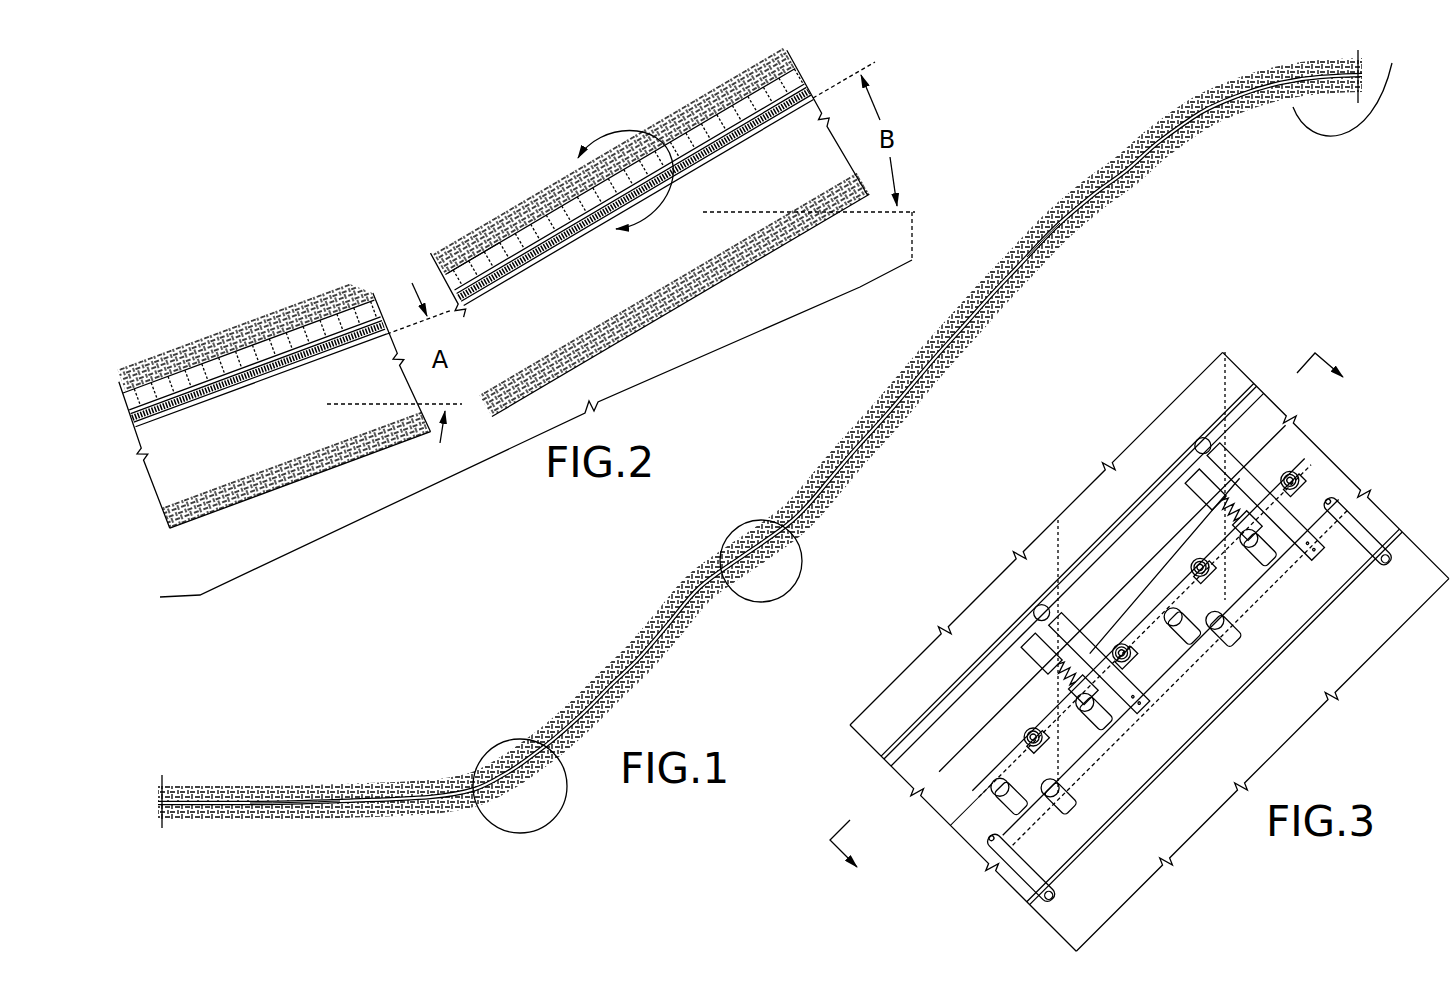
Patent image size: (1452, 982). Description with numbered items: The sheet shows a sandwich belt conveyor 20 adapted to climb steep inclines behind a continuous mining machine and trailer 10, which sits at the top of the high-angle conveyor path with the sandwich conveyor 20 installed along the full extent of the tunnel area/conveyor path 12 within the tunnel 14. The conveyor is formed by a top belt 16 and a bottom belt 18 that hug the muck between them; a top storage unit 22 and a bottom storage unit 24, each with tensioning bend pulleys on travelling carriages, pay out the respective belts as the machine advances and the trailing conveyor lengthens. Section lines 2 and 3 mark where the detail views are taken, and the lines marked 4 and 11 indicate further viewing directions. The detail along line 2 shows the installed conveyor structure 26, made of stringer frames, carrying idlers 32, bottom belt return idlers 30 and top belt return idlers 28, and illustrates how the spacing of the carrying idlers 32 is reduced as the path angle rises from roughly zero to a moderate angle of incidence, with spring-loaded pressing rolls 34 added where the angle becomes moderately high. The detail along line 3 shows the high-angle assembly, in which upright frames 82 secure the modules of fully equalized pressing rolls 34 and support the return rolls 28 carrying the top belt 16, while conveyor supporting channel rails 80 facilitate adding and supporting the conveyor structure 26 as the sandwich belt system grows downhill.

In FIG. 1, the line 2- 2 is at (465, 788).
In FIG. 1, the line 3- 3 is at (710, 578).
In FIG. 2, the section line 4- 4 is at (612, 202).
In FIG. 3, the section line 4- 4 is at (1095, 622).
In FIG. 1, the continuous mining machine and trailer 10 is at (1345, 105).
In FIG. 1, the section line 11- 11 is at (1293, 100).
In FIG. 1, the tunnel area/conveyor path 12 is at (1123, 165).
In FIG. 2, the tunnel area/conveyor path 12 is at (178, 360).
In FIG. 1, the tunnel 14 is at (1100, 232).
In FIG. 2, the tunnel 14 is at (330, 312).
In FIG. 2, the top belt 16 is at (540, 222).
In FIG. 3, the top belt 16 is at (913, 720).
In FIG. 2, the bottom belt 18 is at (538, 262).
In FIG. 3, the bottom belt 18 is at (997, 850).
In FIG. 1, the sandwich belt conveyor 20 is at (1063, 219).
In FIG. 2, the sandwich belt conveyor 20 is at (560, 254).
In FIG. 3, the sandwich belt conveyor 20 is at (968, 812).
In FIG. 1, the top storage unit 22 is at (210, 778).
In FIG. 1, the bottom storage unit 24 is at (295, 778).
In FIG. 2, the conveyor structure 26 is at (477, 260).
In FIG. 3, the conveyor structure 26 is at (1056, 540).
In FIG. 3, the top belt return idlers 28 is at (1043, 612).
In FIG. 3, the bottom belt return idlers 30 is at (1390, 557).
In FIG. 2, the carrying idlers 32 is at (152, 424).
In FIG. 3, the carrying idlers 32 is at (1290, 557).
In FIG. 2, the spring-loaded pressing rolls 34 is at (687, 150).
In FIG. 3, the spring-loaded pressing rolls 34 is at (1200, 567).
In FIG. 3, the conveyor supporting channel rails 80 is at (1170, 677).
In FIG. 3, the upright frames 82 is at (1247, 467).